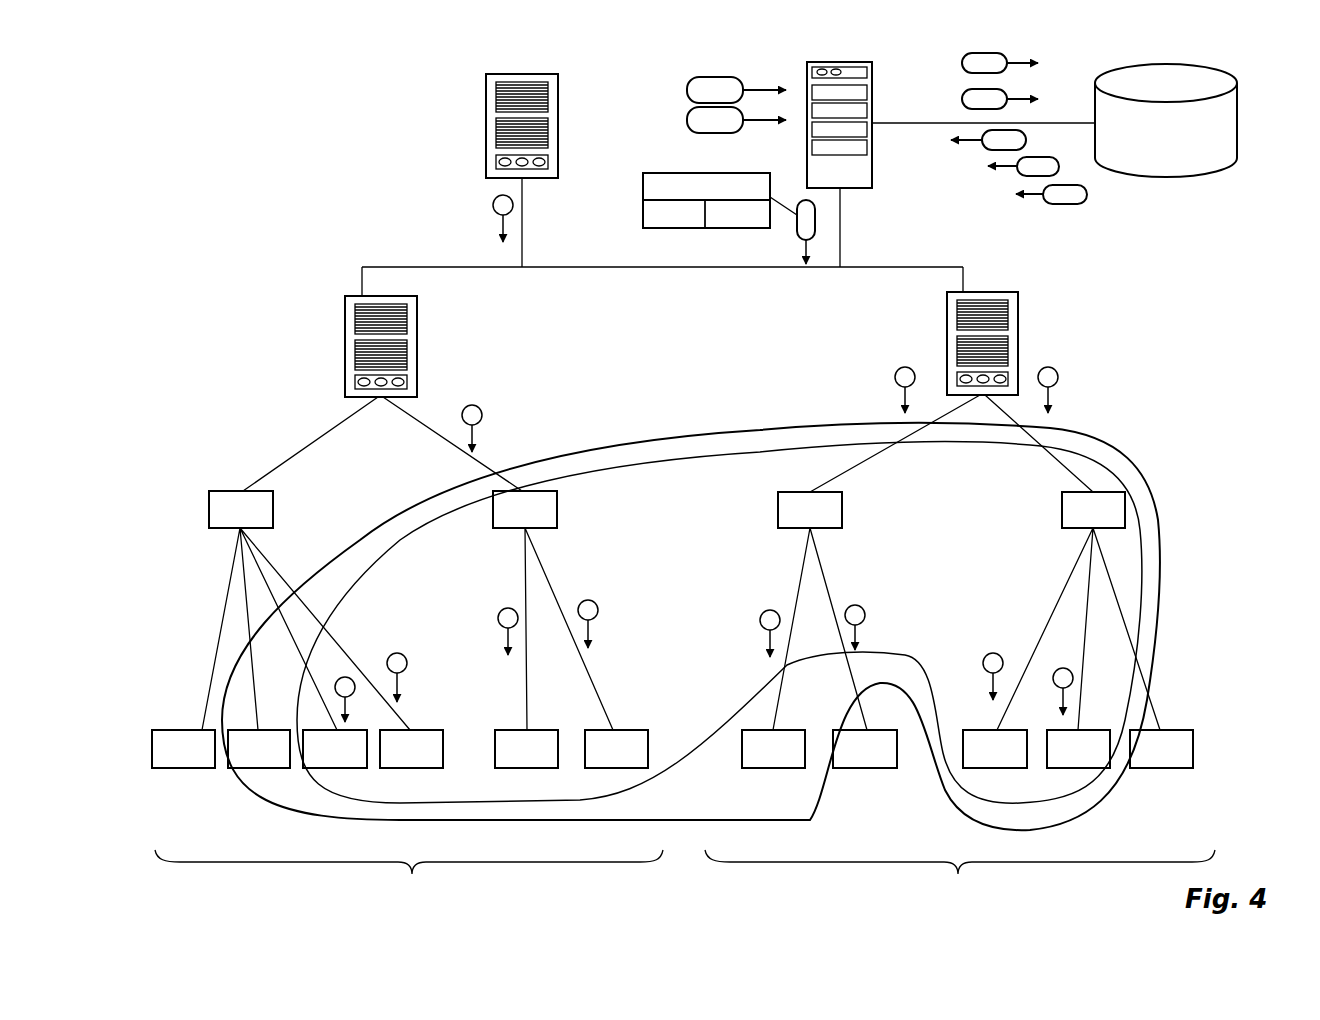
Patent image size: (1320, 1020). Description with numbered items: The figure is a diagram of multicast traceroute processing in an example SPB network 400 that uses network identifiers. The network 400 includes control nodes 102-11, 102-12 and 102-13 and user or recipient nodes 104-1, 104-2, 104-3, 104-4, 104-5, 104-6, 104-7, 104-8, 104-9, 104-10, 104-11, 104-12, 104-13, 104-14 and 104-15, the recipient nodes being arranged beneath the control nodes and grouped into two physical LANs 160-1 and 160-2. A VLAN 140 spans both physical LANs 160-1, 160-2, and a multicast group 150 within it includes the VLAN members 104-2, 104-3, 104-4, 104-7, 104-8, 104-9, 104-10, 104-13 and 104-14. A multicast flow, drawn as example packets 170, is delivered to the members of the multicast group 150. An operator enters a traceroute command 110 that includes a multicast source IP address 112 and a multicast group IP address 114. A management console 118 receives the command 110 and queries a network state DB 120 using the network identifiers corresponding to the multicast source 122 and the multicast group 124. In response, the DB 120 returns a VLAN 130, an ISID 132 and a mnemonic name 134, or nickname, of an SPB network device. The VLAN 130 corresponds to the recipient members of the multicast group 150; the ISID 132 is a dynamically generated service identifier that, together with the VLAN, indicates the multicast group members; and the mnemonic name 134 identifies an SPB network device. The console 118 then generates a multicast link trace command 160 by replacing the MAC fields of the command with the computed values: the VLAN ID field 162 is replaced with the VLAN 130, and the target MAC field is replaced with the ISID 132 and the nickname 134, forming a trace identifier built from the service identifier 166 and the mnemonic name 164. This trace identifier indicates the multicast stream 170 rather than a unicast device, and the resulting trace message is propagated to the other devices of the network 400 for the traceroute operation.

The network 400 is at (305, 184).
The control node 102-11 is at (486, 118).
The control node 102-12 is at (345, 345).
The control node 102-13 is at (947, 342).
The traceroute command 110 is at (687, 106).
The multicast source address 112 is at (705, 76).
The multicast group address 114 is at (687, 118).
The management console 118 is at (872, 190).
The network state DB 120 is at (1205, 176).
The multicast source network identifier 122 is at (962, 63).
The multicast group network identifier 124 is at (962, 99).
The VLAN 130 is at (983, 150).
The ISID 132 is at (1060, 170).
The mnemonic name 134 is at (1068, 204).
The VLAN 140 is at (1112, 440).
The multicast group 150 is at (1143, 547).
The multicast link trace command 160 is at (798, 205).
The VLAN ID field 162 is at (707, 172).
The mnemonic name 164 is at (742, 228).
The service identifier 166 is at (643, 222).
The physical LAN 160-1 is at (418, 866).
The physical LAN 160-2 is at (952, 866).
The multicast flow packets 170 is at (492, 208).
The recipient node 104-1 is at (306, 610).
The recipient node 104-2 is at (553, 610).
The recipient node 104-3 is at (820, 611).
The recipient node 104-4 is at (1078, 611).
The recipient node 104-5 is at (183, 749).
The recipient node 104-6 is at (259, 749).
The recipient node 104-7 is at (335, 749).
The recipient node 104-8 is at (411, 749).
The recipient node 104-9 is at (526, 749).
The recipient node 104-10 is at (616, 749).
The recipient node 104-11 is at (773, 749).
The recipient node 104-12 is at (865, 749).
The recipient node 104-13 is at (995, 749).
The recipient node 104-14 is at (1078, 749).
The recipient node 104-15 is at (1161, 749).